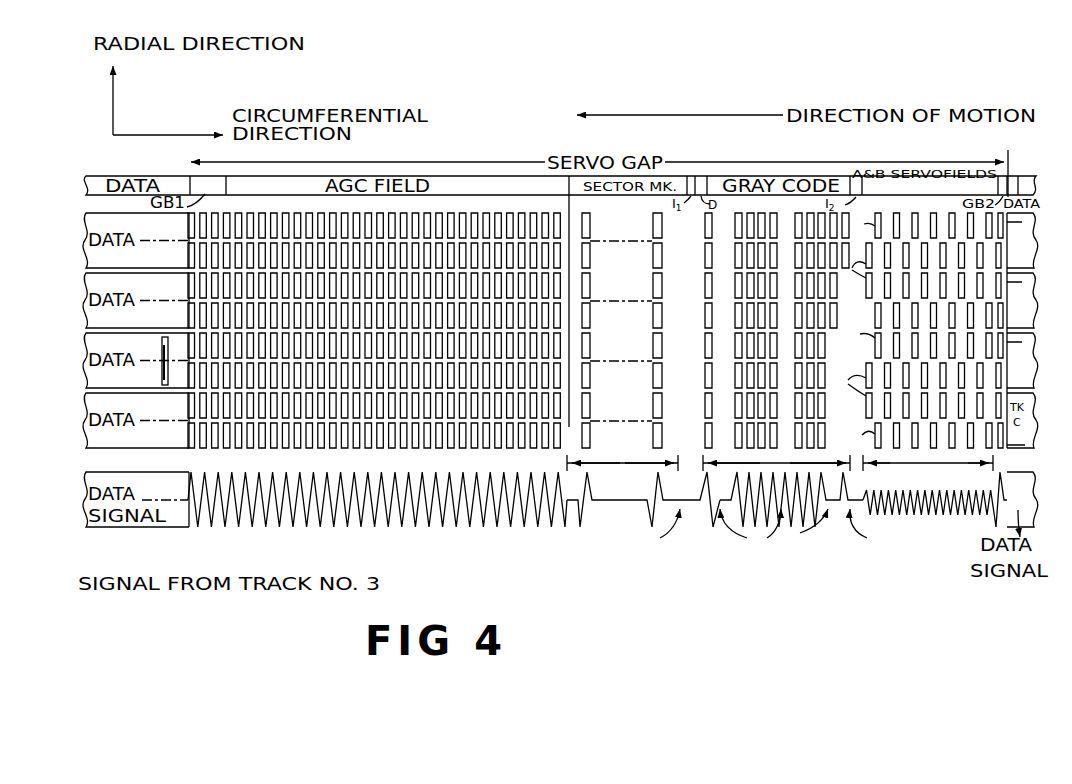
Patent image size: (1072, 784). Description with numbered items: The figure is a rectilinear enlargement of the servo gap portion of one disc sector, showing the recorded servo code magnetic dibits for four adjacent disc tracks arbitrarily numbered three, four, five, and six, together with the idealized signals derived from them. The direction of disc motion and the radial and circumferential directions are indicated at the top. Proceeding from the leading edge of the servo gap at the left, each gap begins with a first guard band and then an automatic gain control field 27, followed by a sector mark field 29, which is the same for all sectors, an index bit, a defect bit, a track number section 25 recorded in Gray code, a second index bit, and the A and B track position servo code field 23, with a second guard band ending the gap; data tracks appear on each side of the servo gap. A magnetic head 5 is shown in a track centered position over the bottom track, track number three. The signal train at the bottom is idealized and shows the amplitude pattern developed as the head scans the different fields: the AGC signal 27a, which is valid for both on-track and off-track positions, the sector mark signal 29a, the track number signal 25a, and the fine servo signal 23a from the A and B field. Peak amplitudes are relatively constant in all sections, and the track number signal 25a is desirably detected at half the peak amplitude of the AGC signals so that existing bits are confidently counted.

The magnetic head 5 is at (162, 352).
The automatic gain control field 27 is at (407, 210).
The sector mark field 29 is at (629, 221).
The track number section 25 is at (788, 229).
The A and B track position servo code field 23 is at (923, 226).
The automatic gain control signal 27a is at (407, 470).
The sector mark signal 29a is at (612, 502).
The track number signal 25a is at (835, 512).
The A and B fine servo field signal 23a is at (957, 507).